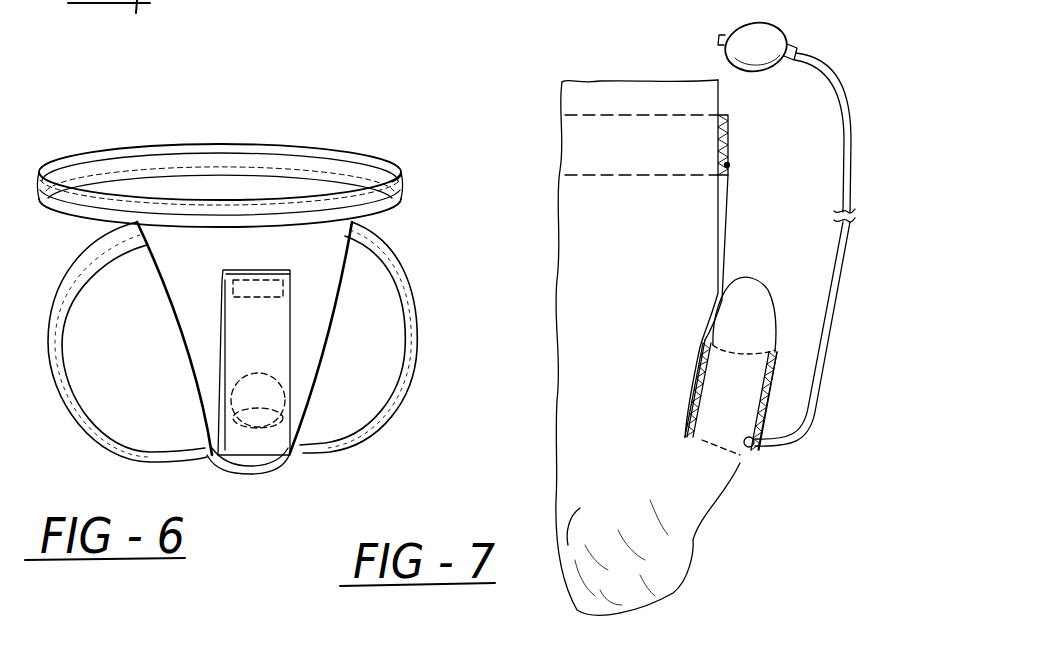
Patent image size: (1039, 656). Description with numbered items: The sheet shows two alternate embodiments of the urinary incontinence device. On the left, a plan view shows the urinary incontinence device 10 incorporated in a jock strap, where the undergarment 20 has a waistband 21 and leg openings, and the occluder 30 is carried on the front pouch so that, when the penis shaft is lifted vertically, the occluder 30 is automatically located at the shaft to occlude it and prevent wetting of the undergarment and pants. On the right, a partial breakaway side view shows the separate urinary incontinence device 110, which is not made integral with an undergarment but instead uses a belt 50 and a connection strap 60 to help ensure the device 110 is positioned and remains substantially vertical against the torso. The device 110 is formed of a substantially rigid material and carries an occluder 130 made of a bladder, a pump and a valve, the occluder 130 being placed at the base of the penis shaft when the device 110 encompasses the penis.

In FIG. 6, the urinary incontinence device 10 is at (184, 404).
In FIG. 6, the undergarment 20 is at (362, 153).
In FIG. 6, the waistband 21 is at (398, 190).
In FIG. 6, the occluder 30 is at (287, 452).
In FIG. 7, the belt 50 is at (730, 132).
In FIG. 7, the connection strap 60 is at (732, 192).
In FIG. 7, the urinary incontinence device 110 is at (758, 464).
In FIG. 7, the occluder 130 is at (758, 450).